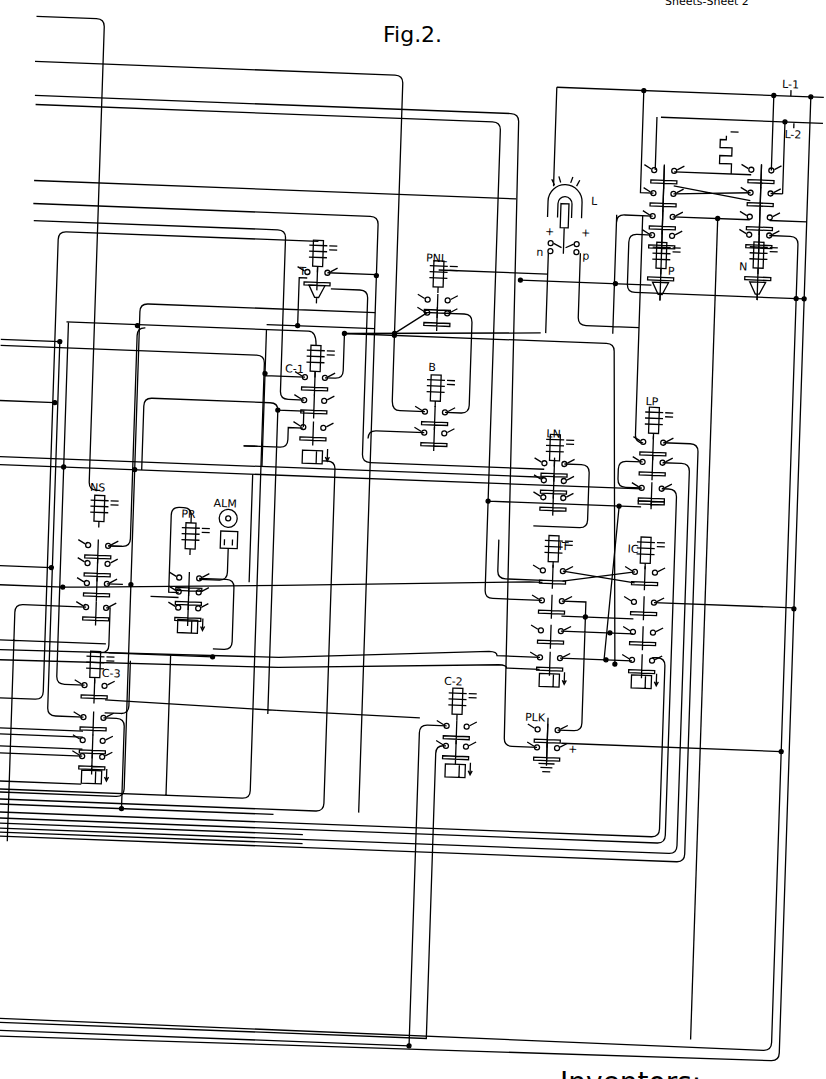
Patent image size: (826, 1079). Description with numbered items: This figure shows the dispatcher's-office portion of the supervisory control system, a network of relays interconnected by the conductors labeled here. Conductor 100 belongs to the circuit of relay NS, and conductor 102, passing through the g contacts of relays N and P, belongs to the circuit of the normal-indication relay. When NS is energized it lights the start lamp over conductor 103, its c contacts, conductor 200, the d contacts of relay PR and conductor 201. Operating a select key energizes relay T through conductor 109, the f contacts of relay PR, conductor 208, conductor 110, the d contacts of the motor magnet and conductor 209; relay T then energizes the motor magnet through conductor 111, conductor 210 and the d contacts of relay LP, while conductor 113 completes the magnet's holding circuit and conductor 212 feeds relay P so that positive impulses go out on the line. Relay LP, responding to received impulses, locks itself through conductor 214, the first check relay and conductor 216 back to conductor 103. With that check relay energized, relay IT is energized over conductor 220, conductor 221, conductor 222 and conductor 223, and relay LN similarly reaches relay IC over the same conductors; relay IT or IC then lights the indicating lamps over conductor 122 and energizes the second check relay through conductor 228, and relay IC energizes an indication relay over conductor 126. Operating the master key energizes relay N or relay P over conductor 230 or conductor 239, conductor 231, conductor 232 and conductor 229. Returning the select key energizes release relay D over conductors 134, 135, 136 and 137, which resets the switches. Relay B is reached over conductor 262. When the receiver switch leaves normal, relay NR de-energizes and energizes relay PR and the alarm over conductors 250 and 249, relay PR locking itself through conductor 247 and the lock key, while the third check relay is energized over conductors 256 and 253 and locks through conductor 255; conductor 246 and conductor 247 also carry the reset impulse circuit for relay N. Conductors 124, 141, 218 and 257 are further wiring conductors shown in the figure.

The conductor 100 is at (67, 15).
The conductor 102 is at (487, 253).
The conductor 103 is at (85, 319).
The conductor 109 is at (49, 639).
The conductor 110 is at (46, 733).
The conductor 111 is at (72, 202).
The conductor 113 is at (129, 803).
The conductor 122 is at (68, 104).
The wire 124 is at (55, 811).
The conductor 126 is at (76, 817).
The conductor 134 is at (50, 464).
The conductor 135 is at (50, 456).
The conductor 136 is at (55, 746).
The conductor 137 is at (40, 780).
The wire 141 is at (49, 339).
The conductor 200 is at (157, 604).
The conductor 201 is at (101, 827).
The conductor 208 is at (73, 788).
The conductor 209 is at (168, 230).
The conductor 210 is at (97, 791).
The conductor 212 is at (296, 179).
The conductor 214 is at (310, 798).
The conductor 216 is at (293, 380).
The wire 218 is at (42, 222).
The conductor 220 is at (560, 519).
The conductor 221 is at (410, 449).
The conductor 222 is at (221, 393).
The conductor 223 is at (374, 306).
The conductor 228 is at (516, 585).
The conductor 229 is at (171, 697).
The conductor 230 is at (57, 1035).
The conductor 231 is at (109, 1029).
The conductor 232 is at (411, 702).
The conductor 239 is at (70, 1017).
The conductor 246 is at (645, 667).
The conductor 247 is at (72, 93).
The conductor 249 is at (173, 556).
The conductor 250 is at (44, 566).
The conductor 253 is at (45, 585).
The conductor 255 is at (152, 664).
The conductor 256 is at (130, 627).
The wire 257 is at (90, 727).
The conductor 262 is at (69, 59).